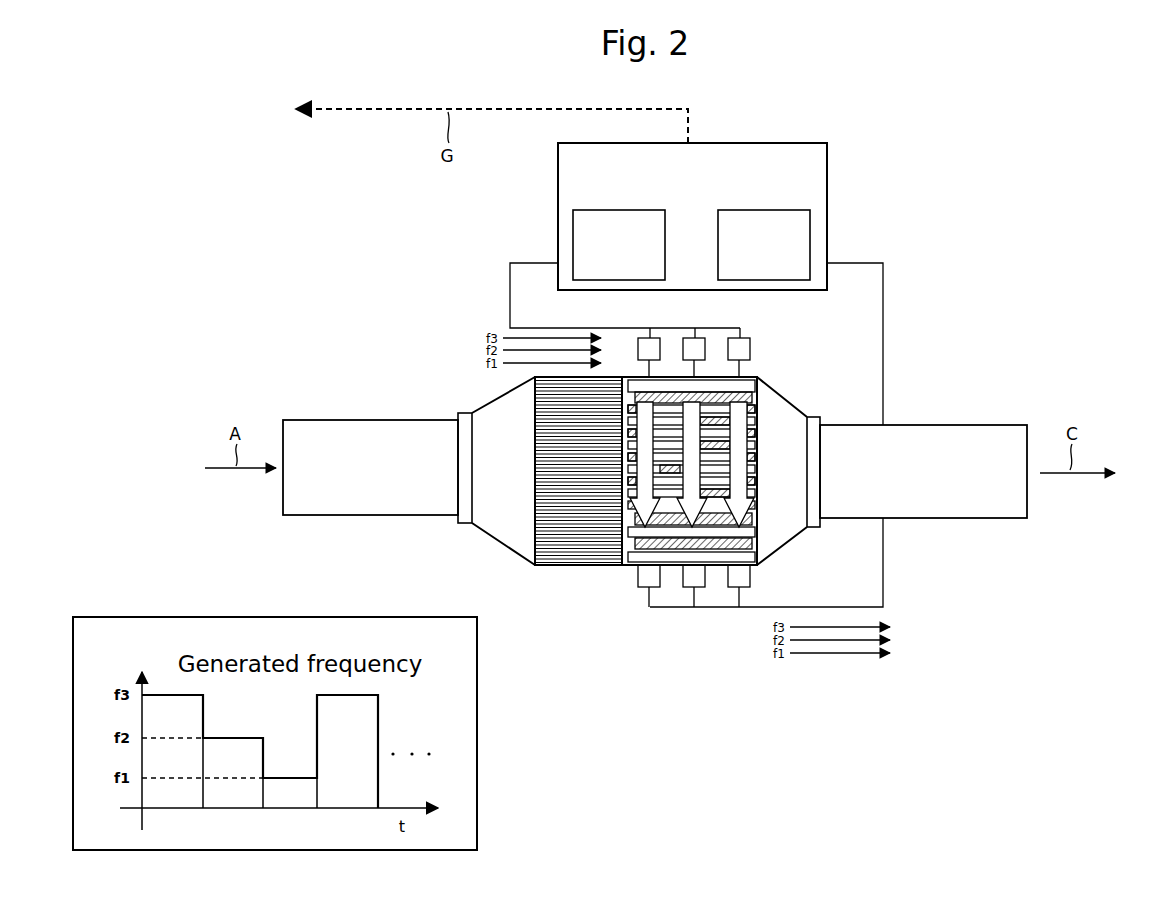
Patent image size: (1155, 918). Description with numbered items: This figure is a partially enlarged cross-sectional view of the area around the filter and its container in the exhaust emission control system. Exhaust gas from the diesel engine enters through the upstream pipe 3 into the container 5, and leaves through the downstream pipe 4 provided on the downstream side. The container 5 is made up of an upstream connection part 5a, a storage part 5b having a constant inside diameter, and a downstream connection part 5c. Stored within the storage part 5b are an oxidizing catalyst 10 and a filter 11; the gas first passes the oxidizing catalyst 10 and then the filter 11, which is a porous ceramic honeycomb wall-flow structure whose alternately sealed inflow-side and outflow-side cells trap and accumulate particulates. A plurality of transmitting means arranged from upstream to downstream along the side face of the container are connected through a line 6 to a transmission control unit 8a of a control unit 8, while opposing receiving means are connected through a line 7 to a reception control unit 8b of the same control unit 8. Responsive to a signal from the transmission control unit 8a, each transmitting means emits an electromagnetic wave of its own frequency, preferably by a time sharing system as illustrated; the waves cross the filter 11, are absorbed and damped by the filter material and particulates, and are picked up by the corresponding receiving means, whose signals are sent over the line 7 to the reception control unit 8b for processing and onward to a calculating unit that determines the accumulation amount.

The upstream pipe 3 is at (362, 428).
The downstream pipe 4 is at (954, 432).
The container 5 is at (651, 471).
The upstream connection part 5a is at (490, 533).
The storage part 5b is at (598, 566).
The downstream connection part 5c is at (797, 410).
The line 6 is at (510, 290).
The line 7 is at (884, 333).
The control unit 8 is at (715, 216).
The transmission control unit 8a is at (618, 217).
The reception control unit 8b is at (765, 217).
The oxidizing catalyst 10 is at (560, 562).
The filter 11 is at (748, 377).